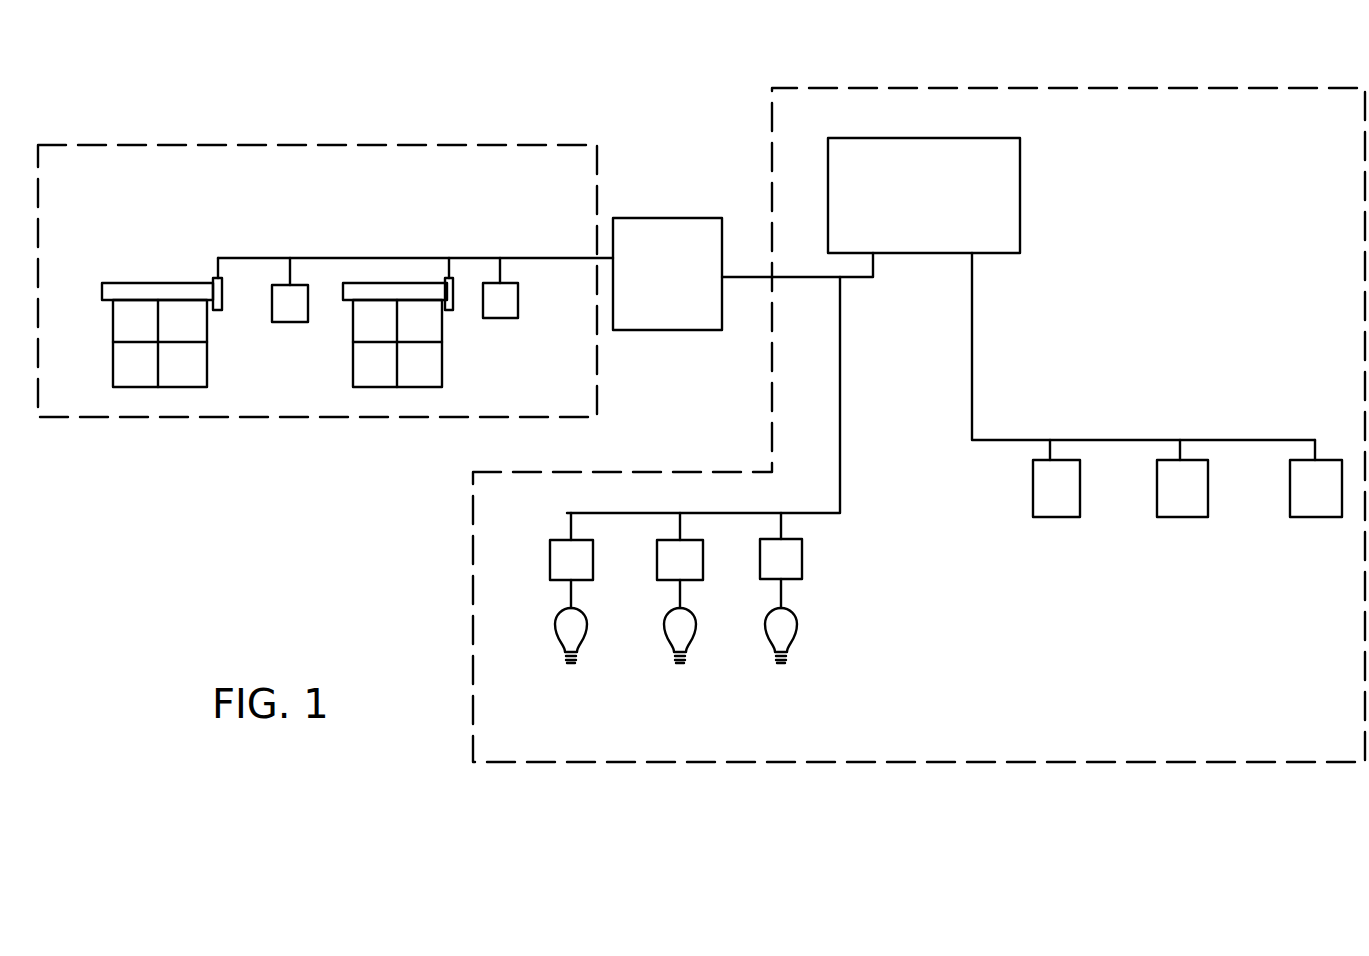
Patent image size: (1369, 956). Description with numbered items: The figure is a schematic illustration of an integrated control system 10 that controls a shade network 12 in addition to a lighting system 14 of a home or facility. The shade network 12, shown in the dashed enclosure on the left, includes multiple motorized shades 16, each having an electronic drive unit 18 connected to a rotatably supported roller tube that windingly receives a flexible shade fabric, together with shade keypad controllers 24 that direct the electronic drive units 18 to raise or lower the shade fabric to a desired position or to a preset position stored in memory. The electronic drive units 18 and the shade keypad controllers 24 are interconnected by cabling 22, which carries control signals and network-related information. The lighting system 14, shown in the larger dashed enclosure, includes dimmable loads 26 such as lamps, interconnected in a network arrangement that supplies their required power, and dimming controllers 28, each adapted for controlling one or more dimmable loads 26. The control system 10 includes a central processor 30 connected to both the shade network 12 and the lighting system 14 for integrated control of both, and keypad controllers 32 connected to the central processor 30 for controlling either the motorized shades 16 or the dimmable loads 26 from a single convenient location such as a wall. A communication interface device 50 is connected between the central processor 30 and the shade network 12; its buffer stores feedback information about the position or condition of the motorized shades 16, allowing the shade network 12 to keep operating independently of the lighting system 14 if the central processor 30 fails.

The control system 10 is at (656, 138).
The shade network 12 is at (338, 143).
The lighting system 14 is at (597, 762).
The motorized shade 16 is at (140, 283).
The electronic drive unit 18 is at (218, 310).
The cabling 22 is at (545, 258).
The shade keypad controller 24 is at (290, 322).
The dimmable load 26 is at (556, 636).
The dimming controller 28 is at (550, 565).
The central processor 30 is at (940, 216).
The keypad controller 32 is at (1056, 517).
The communication interface device 50 is at (680, 296).